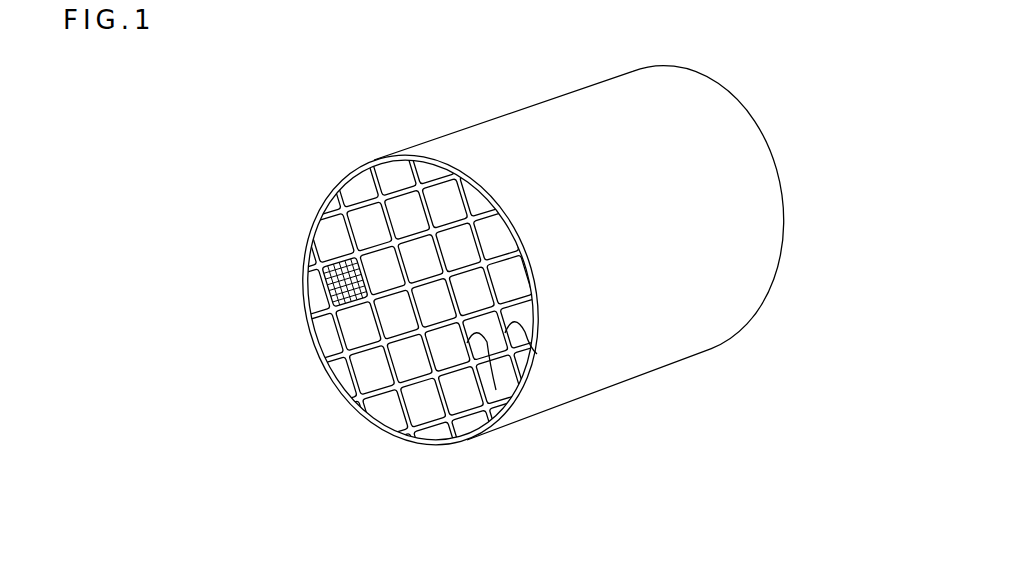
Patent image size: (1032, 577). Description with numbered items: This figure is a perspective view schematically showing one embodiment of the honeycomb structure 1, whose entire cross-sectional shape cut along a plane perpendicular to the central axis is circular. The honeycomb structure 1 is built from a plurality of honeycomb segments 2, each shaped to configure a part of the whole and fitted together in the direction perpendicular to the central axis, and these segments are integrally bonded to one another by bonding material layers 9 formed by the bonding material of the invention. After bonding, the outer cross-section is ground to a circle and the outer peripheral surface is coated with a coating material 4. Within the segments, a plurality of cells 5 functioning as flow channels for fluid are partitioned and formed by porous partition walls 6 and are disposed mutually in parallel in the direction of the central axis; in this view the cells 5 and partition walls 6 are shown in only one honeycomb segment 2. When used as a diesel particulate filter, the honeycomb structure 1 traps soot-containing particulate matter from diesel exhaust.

The honeycomb structure 1 is at (515, 91).
The honeycomb segment 2 is at (358, 327).
The coating material 4 is at (302, 297).
The cell 5 is at (327, 250).
The partition wall 6 is at (334, 262).
The bonding material layer 9 is at (496, 390).